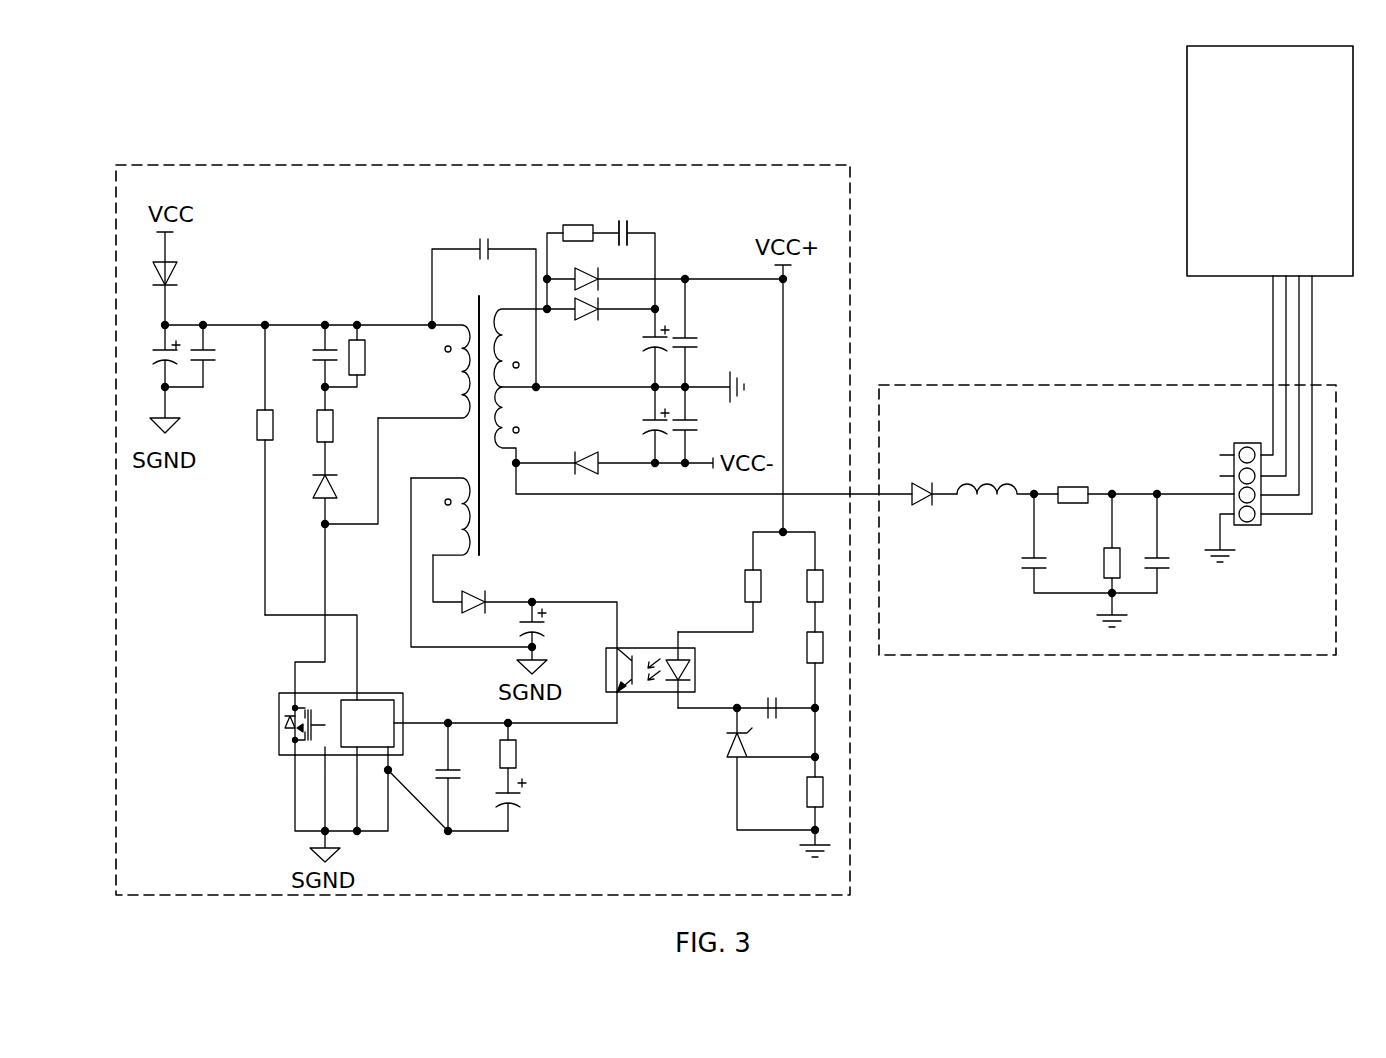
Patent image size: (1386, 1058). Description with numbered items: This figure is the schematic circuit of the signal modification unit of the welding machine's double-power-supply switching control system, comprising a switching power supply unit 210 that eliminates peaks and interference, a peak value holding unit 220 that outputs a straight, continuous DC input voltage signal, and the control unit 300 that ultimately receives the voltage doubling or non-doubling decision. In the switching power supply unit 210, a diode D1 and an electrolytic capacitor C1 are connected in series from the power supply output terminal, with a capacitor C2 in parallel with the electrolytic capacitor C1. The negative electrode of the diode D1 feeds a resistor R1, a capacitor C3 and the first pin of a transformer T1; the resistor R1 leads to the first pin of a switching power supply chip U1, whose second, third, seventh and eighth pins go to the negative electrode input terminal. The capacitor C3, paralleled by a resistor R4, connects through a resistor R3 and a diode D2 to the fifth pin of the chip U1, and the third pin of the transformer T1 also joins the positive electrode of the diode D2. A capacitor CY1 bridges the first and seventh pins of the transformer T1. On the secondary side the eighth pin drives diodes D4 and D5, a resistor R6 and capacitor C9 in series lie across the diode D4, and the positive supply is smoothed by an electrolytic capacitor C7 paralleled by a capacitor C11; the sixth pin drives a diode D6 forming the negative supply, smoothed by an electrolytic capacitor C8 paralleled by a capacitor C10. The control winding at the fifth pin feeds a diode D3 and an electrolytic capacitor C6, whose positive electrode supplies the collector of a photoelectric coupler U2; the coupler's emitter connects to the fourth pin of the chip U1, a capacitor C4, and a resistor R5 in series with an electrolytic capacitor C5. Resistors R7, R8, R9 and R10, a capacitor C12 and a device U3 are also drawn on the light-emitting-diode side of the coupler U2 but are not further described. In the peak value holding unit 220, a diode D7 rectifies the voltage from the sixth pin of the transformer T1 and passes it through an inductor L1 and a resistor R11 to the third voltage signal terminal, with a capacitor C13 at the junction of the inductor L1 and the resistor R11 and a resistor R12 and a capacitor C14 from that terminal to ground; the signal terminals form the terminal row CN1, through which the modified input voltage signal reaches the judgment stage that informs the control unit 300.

The switching power supply unit 210 is at (735, 165).
The peak value holding unit 220 is at (1193, 655).
The control unit 300 is at (1187, 143).
The diode D1 is at (151, 271).
The electrolytic capacitor C1 is at (153, 356).
The capacitor C2 is at (214, 360).
The capacitor C3 is at (306, 356).
The resistor R1 is at (281, 470).
The resistor R3 is at (340, 431).
The resistor R4 is at (363, 356).
The diode D2 is at (342, 493).
The transformer T1 is at (462, 413).
The capacitor CY1 is at (484, 294).
The resistor R6 is at (577, 219).
The capacitor C9 is at (624, 221).
The diode D5 is at (665, 271).
The diode D4 is at (601, 326).
The electrolytic capacitor C7 is at (636, 348).
The capacitor C11 is at (710, 333).
The electrolytic capacitor C8 is at (636, 425).
The capacitor C10 is at (710, 425).
The diode D6 is at (614, 452).
The diode D3 is at (482, 584).
The electrolytic capacitor C6 is at (549, 624).
The switching power supply chip U1 is at (332, 728).
The capacitor C4 is at (463, 777).
The resistor R5 is at (528, 758).
The electrolytic capacitor C5 is at (527, 805).
The photoelectric coupler U2 is at (649, 663).
The resistor R7 is at (737, 586).
The resistor R8 is at (798, 601).
The resistor R9 is at (798, 670).
The capacitor C12 is at (773, 695).
The voltage reference (TL431) U3 is at (751, 769).
The resistor R10 is at (788, 792).
The diode D7 is at (931, 478).
The inductor L1 is at (1007, 477).
The resistor R11 is at (1142, 479).
The resistor R12 is at (1089, 560).
The capacitor C13 is at (1063, 543).
The capacitor C14 is at (1175, 545).
The terminal row CN1 is at (1258, 419).